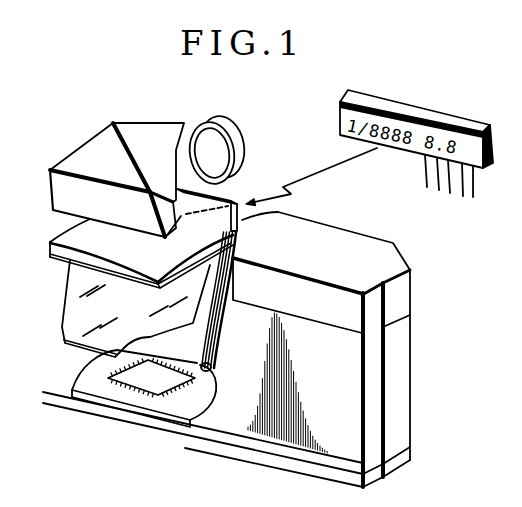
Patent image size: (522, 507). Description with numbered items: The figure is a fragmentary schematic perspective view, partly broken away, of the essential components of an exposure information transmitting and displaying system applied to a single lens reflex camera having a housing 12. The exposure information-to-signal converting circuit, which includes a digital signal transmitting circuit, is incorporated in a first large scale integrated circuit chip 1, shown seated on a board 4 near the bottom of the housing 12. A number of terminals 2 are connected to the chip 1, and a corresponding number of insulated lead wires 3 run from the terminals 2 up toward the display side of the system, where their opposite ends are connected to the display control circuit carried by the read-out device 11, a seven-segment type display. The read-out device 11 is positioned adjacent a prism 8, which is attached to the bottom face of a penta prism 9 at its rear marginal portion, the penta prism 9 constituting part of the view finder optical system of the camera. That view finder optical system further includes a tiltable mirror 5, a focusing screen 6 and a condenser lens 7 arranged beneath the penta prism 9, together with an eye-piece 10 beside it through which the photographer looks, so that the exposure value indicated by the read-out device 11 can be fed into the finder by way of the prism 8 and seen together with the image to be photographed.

The first large scale integrated circuit chip 1 is at (152, 383).
The terminals 2 is at (213, 367).
The insulated lead wires 3 is at (214, 330).
The circuit board 4 is at (93, 383).
The tiltable mirror 5 is at (68, 332).
The focusing screen 6 is at (70, 262).
The condenser lens 7 is at (50, 248).
The prism 8 is at (238, 240).
The penta prism 9 is at (148, 137).
The eye-piece 10 is at (237, 142).
The read-out device 11 is at (280, 212).
The housing 12 is at (412, 367).